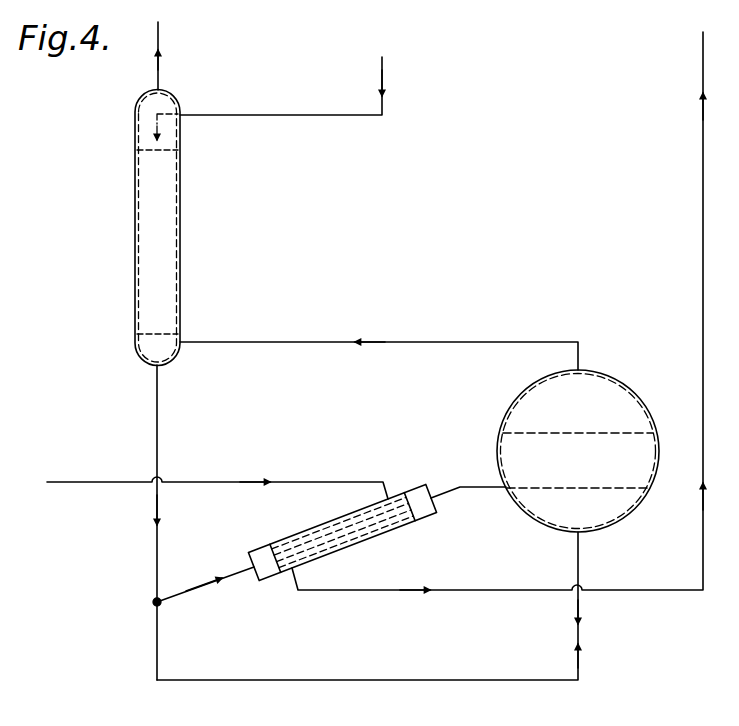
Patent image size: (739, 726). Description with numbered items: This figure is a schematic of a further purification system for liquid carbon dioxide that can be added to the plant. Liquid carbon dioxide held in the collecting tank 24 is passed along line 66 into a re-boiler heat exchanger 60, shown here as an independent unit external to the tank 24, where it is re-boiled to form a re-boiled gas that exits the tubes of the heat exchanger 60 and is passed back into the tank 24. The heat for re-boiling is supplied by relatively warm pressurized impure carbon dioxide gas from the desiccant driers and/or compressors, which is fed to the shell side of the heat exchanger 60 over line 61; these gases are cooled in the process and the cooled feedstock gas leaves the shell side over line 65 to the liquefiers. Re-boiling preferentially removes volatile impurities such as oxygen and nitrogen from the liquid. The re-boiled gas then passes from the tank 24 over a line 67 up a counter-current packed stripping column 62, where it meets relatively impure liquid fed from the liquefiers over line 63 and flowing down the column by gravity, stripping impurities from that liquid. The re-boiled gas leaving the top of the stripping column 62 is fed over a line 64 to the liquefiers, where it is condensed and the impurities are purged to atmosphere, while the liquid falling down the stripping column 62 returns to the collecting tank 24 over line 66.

The collecting tank 24 is at (518, 401).
The re-boiler heat exchanger 60 is at (380, 536).
The line 61 is at (106, 482).
The counter-current packed stripping column 62 is at (181, 322).
The line 63 is at (330, 115).
The line 64 is at (160, 79).
The line 65 is at (490, 590).
The line 66 is at (510, 680).
The line 67 is at (508, 342).